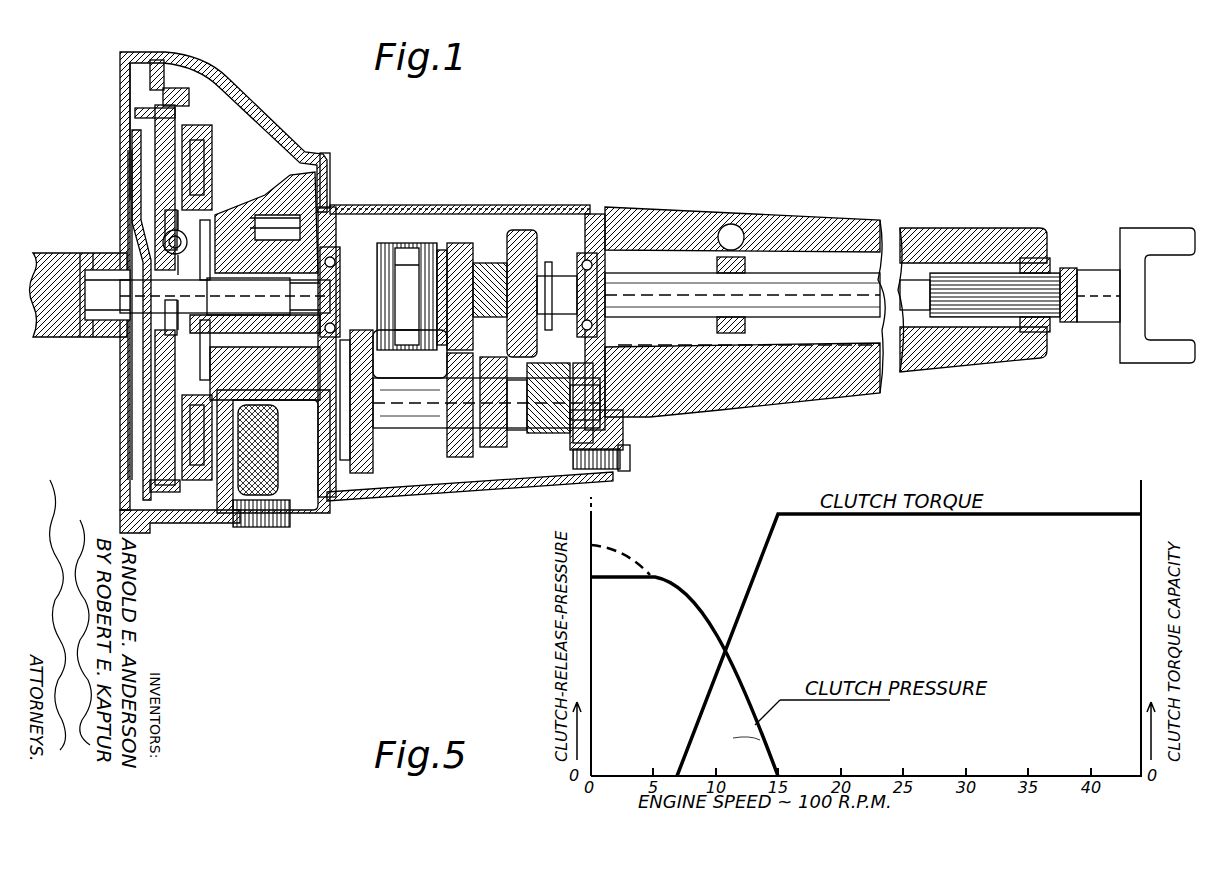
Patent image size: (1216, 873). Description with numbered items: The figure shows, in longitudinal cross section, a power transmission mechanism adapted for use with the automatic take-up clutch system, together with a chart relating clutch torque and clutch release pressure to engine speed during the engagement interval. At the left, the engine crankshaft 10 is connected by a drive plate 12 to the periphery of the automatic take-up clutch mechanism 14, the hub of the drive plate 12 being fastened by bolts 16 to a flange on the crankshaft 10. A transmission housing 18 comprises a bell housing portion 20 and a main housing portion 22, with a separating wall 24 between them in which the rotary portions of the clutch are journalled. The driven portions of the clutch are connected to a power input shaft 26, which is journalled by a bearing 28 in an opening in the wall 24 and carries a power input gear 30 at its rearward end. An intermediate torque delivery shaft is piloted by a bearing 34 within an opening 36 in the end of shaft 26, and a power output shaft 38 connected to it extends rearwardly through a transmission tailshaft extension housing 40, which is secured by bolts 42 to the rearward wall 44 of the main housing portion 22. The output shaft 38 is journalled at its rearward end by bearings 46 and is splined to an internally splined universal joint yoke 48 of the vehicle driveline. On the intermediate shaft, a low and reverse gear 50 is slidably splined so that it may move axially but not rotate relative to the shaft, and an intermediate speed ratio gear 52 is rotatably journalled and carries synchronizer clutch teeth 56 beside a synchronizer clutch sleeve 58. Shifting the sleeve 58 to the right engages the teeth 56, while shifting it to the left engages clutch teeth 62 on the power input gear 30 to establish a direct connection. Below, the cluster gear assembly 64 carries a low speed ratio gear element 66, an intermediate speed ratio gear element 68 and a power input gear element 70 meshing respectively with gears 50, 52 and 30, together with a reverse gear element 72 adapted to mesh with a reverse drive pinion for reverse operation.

The engine crankshaft 10 is at (52, 252).
The drive plate 12 is at (130, 155).
The automatic take-up clutch mechanism 14 is at (215, 100).
The bolts 16 is at (136, 217).
The transmission housing 18 is at (323, 150).
The bell housing portion 20 is at (240, 95).
The main housing portion 22 is at (320, 437).
The separating wall 24 is at (282, 192).
The power input shaft 26 is at (243, 280).
The bearing 28 is at (318, 414).
The power input gear 30 is at (357, 277).
The bearing 34 is at (350, 266).
The opening 36 is at (357, 246).
The power output shaft 38 is at (632, 282).
The transmission tailshaft extension housing 40 is at (797, 243).
The bolts 42 is at (628, 457).
The wall 44 is at (617, 433).
The bearings 46 is at (997, 262).
The universal joint yoke 48 is at (1083, 268).
The low and reverse gear 50 is at (517, 236).
The intermediate speed ratio gear 52 is at (453, 242).
The synchronizer clutch teeth 56 is at (437, 252).
The synchronizer clutch sleeve 58 is at (397, 240).
The clutch teeth 62 is at (380, 348).
The cluster gear assembly 64 is at (420, 433).
The low speed ratio gear element 66 is at (493, 450).
The intermediate speed ratio gear element 68 is at (457, 455).
The power input gear element 70 is at (363, 470).
The reverse gear element 72 is at (540, 432).